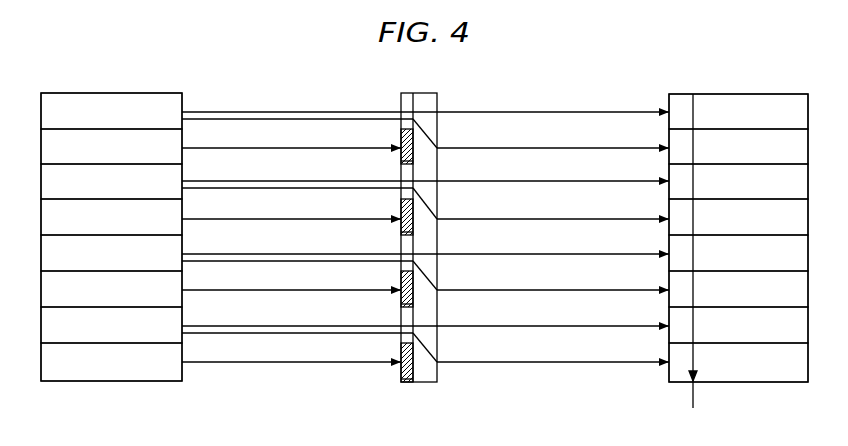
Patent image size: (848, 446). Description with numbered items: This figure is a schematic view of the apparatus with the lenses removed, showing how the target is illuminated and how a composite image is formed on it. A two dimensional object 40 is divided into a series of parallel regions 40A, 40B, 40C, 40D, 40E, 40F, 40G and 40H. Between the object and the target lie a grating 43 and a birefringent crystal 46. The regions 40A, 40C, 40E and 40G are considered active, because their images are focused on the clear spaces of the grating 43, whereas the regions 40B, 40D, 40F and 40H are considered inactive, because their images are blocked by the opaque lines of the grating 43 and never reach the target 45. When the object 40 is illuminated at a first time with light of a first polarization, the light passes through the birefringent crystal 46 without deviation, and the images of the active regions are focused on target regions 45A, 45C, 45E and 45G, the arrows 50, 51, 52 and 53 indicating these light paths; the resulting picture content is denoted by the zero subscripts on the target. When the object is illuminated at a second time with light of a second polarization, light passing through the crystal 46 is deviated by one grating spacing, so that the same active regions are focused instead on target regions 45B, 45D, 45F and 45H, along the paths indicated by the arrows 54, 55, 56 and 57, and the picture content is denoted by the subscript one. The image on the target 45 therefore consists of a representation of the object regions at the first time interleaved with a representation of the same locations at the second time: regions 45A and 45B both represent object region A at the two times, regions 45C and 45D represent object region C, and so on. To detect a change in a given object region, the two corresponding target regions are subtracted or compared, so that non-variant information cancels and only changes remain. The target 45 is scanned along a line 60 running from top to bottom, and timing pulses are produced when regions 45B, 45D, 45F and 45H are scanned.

The object 40 is at (203, 89).
The object region A 40A is at (111, 111).
The object region B 40B is at (111, 146).
The object region C 40C is at (111, 181).
The object region D 40D is at (111, 217).
The object region E 40E is at (111, 253).
The object region F 40F is at (111, 289).
The object region G 40G is at (111, 325).
The object region H 40H is at (111, 362).
The grating 43 is at (405, 384).
The target 45 is at (824, 79).
The target region A 45A is at (670, 105).
The target region B 45B is at (670, 141).
The target region C 45C is at (670, 176).
The target region D 45D is at (670, 211).
The target region E 45E is at (670, 247).
The target region F 45F is at (670, 283).
The target region G 45G is at (670, 319).
The target region H 45H is at (670, 354).
The birefringent crystal 46 is at (431, 80).
The arrow 50 is at (253, 108).
The arrow 51 is at (253, 180).
The arrow 52 is at (252, 253).
The arrow 53 is at (253, 326).
The arrow 54 is at (361, 118).
The arrow 55 is at (361, 189).
The arrow 56 is at (361, 260).
The arrow 57 is at (360, 332).
The scan line 60 is at (695, 352).